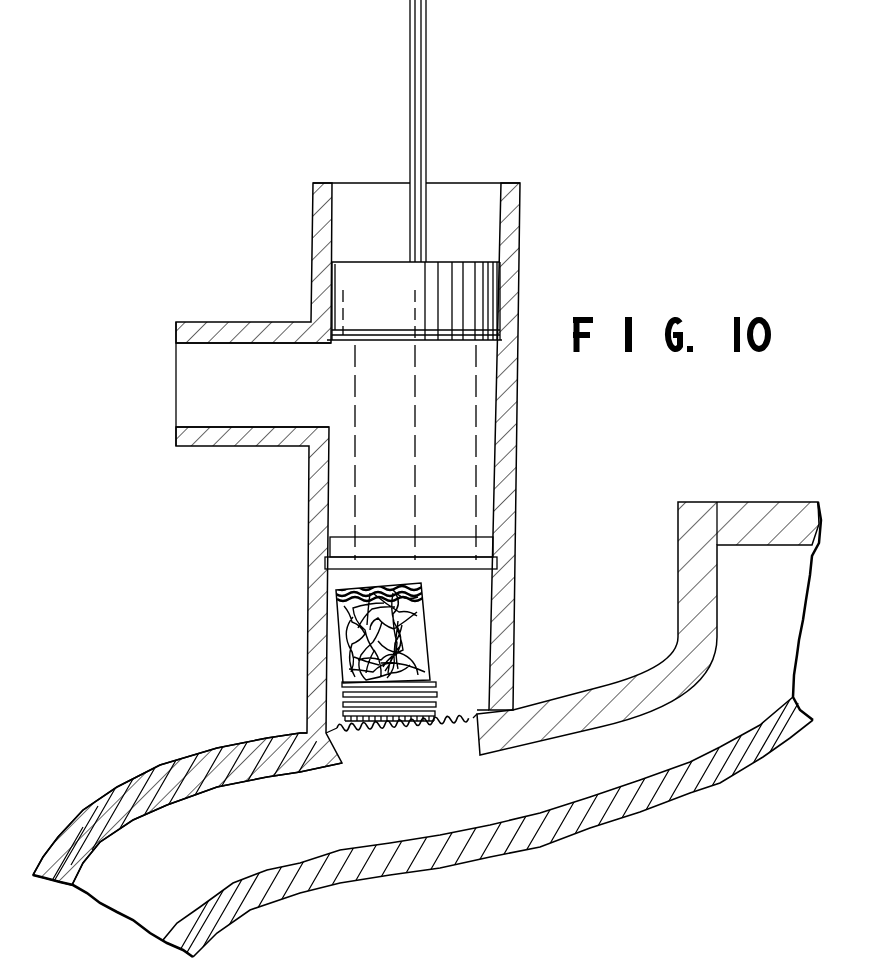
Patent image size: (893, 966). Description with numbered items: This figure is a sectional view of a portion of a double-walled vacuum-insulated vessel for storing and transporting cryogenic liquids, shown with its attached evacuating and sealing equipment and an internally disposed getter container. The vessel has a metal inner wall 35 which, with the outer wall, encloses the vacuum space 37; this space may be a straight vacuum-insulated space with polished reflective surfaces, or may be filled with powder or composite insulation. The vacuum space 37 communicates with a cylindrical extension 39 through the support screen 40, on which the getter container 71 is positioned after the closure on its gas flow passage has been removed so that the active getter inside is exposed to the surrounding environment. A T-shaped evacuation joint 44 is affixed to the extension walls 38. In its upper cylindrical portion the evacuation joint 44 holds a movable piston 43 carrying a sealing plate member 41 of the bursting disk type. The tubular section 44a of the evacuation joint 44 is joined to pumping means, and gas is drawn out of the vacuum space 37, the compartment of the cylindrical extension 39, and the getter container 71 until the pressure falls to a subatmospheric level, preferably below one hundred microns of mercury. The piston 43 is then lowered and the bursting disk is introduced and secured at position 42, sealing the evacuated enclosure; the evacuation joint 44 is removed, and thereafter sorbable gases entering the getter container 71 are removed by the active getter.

The inner wall 35 is at (502, 847).
The vacuum space 37 is at (372, 825).
The extension walls 38 is at (503, 695).
The cylindrical extension 39 is at (473, 632).
The support screen 40 is at (343, 729).
The sealing plate member 41 is at (493, 335).
The sealing position 42 is at (490, 565).
The movable piston 43 is at (487, 291).
The evacuation joint 44 is at (519, 423).
The tubular section 44a is at (208, 358).
The getter container 71 is at (337, 680).